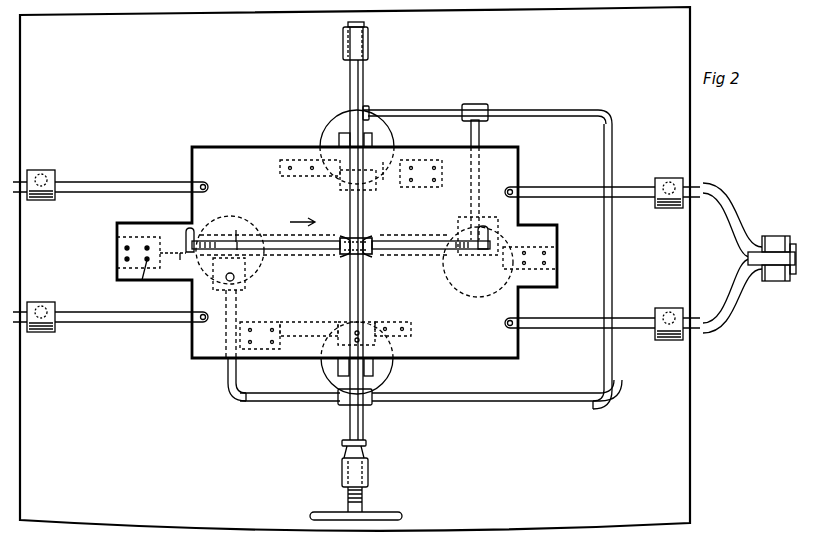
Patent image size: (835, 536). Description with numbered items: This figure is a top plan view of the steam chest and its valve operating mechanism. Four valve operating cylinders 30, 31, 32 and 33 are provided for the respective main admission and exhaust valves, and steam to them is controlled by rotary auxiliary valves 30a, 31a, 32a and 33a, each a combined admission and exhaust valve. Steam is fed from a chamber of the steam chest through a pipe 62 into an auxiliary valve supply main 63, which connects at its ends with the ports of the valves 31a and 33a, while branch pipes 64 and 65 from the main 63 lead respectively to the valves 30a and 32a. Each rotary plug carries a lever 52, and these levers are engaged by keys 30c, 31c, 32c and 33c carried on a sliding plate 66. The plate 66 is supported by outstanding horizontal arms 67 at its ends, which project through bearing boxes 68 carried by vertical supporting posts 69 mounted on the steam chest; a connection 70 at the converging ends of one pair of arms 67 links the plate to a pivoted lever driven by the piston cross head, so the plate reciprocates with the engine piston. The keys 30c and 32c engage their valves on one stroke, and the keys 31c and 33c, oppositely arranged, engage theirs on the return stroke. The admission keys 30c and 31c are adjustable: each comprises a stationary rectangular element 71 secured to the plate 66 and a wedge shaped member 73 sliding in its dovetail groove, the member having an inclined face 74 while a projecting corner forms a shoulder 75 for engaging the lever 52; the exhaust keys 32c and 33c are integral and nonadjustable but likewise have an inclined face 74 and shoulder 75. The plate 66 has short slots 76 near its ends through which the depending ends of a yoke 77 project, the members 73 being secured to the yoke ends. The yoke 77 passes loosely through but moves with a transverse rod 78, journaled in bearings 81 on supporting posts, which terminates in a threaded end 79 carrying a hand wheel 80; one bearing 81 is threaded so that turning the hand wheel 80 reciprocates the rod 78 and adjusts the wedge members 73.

The valve operating cylinder 30 is at (472, 284).
The rotary auxiliary valve 30a is at (486, 222).
The key 30c is at (520, 248).
The valve operating cylinder 31 is at (258, 270).
The rotary auxiliary valve 31a is at (245, 290).
The key 31c is at (174, 240).
The valve operating cylinder 32 is at (334, 128).
The rotary auxiliary valve 32a is at (345, 131).
The key 32c is at (336, 172).
The valve operating cylinder 33 is at (388, 380).
The rotary auxiliary valve 33a is at (375, 362).
The key 33c is at (292, 324).
The lever 52 is at (236, 242).
The pipe 62 is at (610, 400).
The auxiliary valve supply main 63 is at (546, 404).
The branch pipe 64 is at (486, 129).
The branch pipe 65 is at (340, 370).
The sliding plate 66 is at (487, 257).
The horizontal arm 67 is at (110, 194).
The bearing box 68 is at (44, 201).
The vertical supporting post 69 is at (55, 177).
The connection 70 is at (772, 280).
The stationary rectangular element 71 is at (146, 268).
The wedge shaped member 73 is at (186, 256).
The inclined face 74 is at (365, 180).
The shoulder 75 is at (402, 190).
The slot 76 is at (192, 230).
The yoke 77 is at (332, 250).
The transverse rod 78 is at (366, 258).
The threaded end 79 is at (364, 492).
The hand wheel 80 is at (400, 515).
The bearing 81 is at (369, 38).